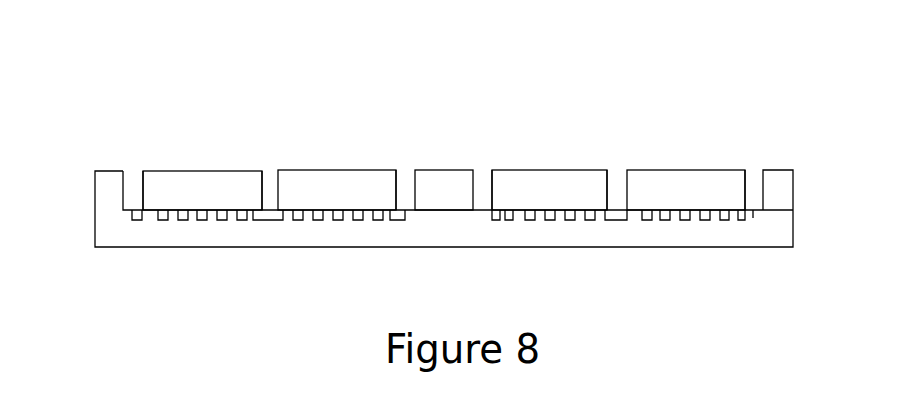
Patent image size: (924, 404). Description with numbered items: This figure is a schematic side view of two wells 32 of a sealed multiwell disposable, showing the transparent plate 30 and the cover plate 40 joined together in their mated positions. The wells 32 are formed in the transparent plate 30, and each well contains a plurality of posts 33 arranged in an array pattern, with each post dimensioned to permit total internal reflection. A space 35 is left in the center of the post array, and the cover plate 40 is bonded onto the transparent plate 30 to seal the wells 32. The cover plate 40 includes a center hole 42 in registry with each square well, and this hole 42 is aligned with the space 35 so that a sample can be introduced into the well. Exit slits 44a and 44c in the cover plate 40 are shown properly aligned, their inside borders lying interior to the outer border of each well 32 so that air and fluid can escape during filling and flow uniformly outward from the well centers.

The transparent plate 30 is at (775, 228).
The well 32 is at (745, 218).
The post 33 is at (540, 212).
The space 35 is at (268, 220).
The cover plate 40 is at (338, 180).
The center hole 42 is at (612, 178).
The exit slit 44a is at (488, 180).
The exit slit 44c is at (748, 178).